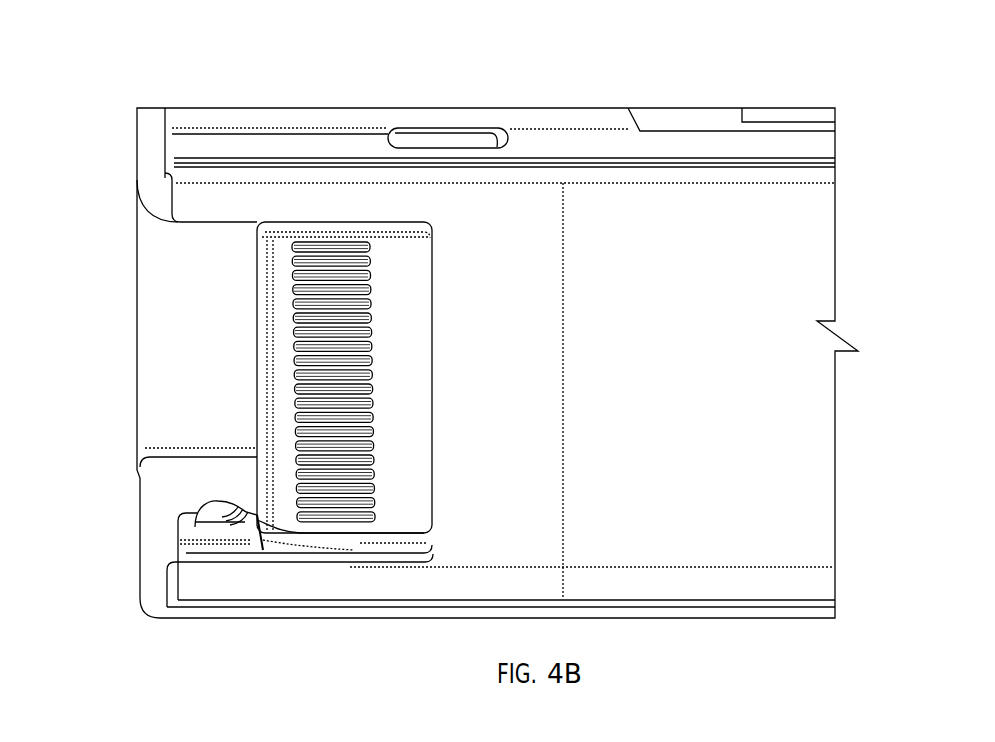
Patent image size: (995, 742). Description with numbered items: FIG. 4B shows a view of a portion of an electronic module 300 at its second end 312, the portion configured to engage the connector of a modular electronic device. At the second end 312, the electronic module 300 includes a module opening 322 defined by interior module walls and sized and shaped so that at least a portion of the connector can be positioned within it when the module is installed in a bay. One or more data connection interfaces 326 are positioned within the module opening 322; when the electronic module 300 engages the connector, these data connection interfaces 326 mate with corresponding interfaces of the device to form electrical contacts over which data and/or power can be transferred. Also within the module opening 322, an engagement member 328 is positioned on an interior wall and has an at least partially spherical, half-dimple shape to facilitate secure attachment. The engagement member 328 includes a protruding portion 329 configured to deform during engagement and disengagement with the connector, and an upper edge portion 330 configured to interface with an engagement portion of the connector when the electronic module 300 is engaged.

The electronic module 300 is at (170, 63).
The second end 312 is at (104, 186).
The module opening 322 is at (170, 299).
The data connection interface 326 is at (357, 523).
The engagement member 328 is at (190, 533).
The protruding portion 329 is at (213, 515).
The upper edge portion 330 is at (217, 498).